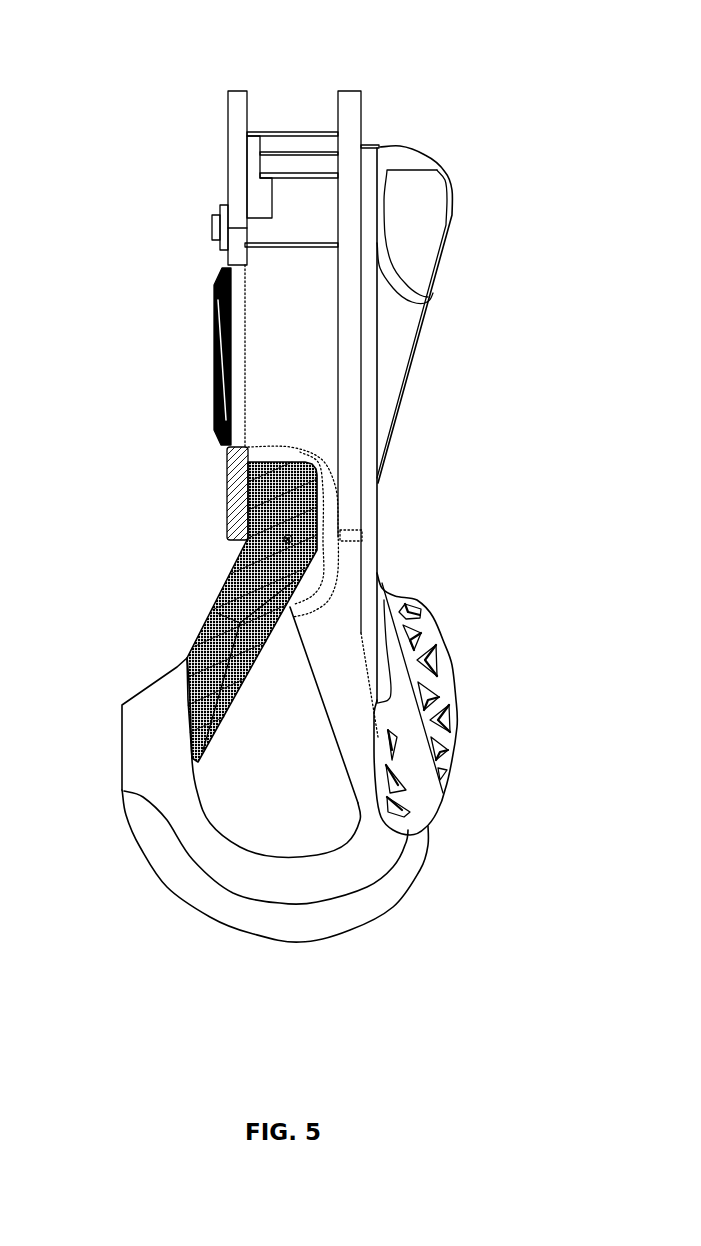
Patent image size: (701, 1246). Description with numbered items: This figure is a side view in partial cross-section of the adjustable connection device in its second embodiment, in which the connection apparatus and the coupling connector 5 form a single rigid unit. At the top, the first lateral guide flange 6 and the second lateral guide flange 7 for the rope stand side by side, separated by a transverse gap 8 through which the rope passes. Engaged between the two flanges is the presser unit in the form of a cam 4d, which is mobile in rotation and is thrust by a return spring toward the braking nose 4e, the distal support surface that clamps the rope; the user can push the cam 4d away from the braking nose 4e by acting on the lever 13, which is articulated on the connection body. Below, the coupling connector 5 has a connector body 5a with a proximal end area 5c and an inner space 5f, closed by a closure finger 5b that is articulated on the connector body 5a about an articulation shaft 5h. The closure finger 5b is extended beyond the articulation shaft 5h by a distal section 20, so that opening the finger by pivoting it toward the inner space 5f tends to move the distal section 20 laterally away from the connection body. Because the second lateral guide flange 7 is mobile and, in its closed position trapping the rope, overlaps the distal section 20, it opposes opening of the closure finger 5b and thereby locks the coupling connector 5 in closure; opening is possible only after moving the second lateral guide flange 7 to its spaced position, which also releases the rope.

The coupling connector 5 is at (105, 798).
The connector body 5a is at (230, 872).
The closure finger 5b is at (210, 637).
The proximal end area 5c is at (300, 923).
The inner space 5f is at (318, 822).
The articulation shaft 5h is at (292, 537).
The first lateral guide flange 6 is at (348, 113).
The second lateral guide flange 7 is at (240, 120).
The transverse gap 8 is at (318, 103).
The cam 4d is at (282, 165).
The braking nose 4e is at (285, 200).
The lever 13 is at (425, 637).
The distal section 20 is at (270, 498).